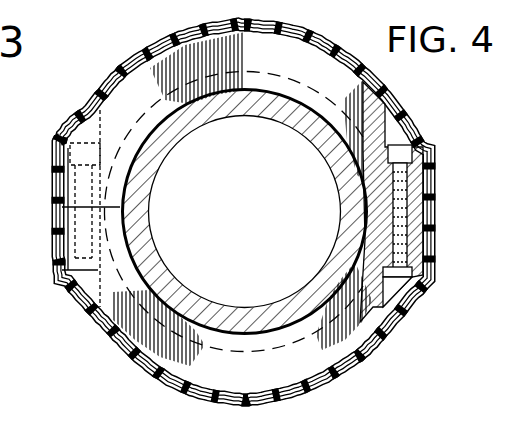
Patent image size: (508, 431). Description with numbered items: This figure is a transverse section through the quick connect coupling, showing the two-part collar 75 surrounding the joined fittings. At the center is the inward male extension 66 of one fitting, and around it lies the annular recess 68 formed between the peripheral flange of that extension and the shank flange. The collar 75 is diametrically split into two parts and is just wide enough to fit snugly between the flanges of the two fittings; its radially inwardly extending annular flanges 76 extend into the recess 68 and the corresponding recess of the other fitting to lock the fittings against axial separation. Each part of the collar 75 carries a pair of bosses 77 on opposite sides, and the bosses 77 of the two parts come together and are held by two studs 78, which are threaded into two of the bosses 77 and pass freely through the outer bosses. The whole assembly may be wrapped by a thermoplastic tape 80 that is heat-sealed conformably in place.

The male extension 66 is at (348, 207).
The annular recess 68 is at (172, 118).
The collar 75 is at (271, 51).
The annular flanges 76 is at (224, 80).
The bosses 77 is at (417, 210).
The studs 78 is at (398, 157).
The thermoplastic tape 80 is at (124, 64).